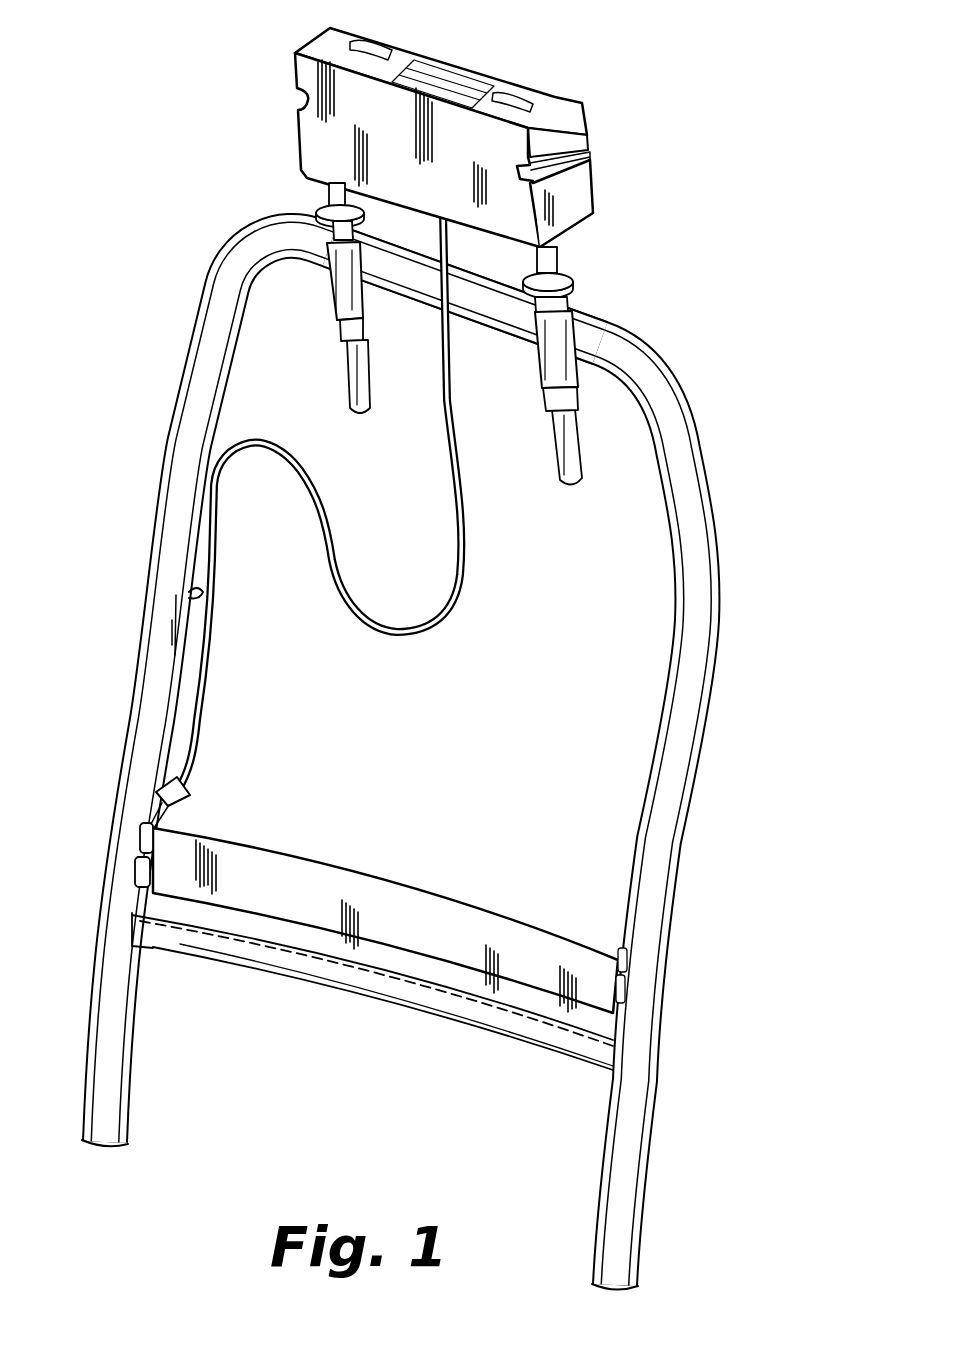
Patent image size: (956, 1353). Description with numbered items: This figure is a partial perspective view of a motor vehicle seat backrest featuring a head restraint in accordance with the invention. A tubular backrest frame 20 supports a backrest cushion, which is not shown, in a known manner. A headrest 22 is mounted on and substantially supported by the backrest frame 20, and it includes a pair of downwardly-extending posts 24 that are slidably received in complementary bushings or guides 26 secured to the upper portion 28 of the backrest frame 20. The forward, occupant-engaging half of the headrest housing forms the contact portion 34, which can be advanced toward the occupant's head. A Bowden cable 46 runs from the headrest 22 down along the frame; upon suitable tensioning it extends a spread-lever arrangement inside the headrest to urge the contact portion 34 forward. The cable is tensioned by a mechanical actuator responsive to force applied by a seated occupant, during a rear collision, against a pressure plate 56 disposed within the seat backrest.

The backrest frame 20 is at (713, 517).
The headrest 22 is at (621, 201).
The posts 24 is at (330, 193).
The guides 26 is at (330, 290).
The upper portion of the backrest frame 28 is at (590, 312).
The contact portion 34 is at (307, 123).
The Bowden cable 46 is at (465, 550).
The pressure plate 56 is at (410, 892).